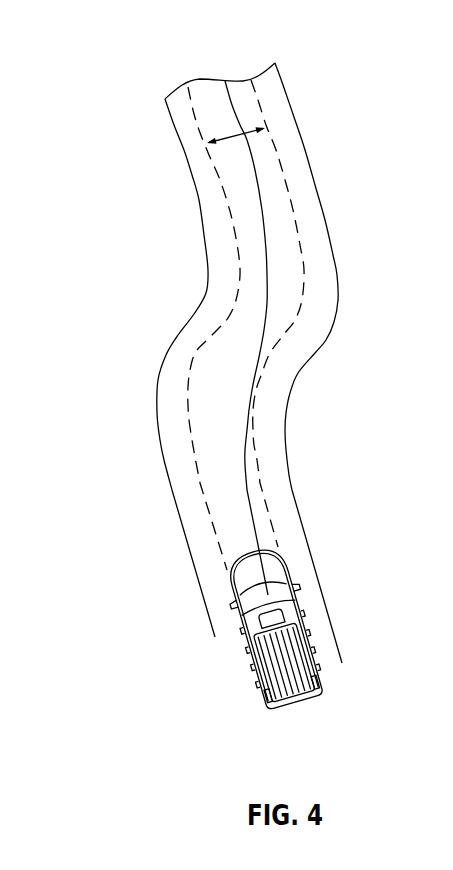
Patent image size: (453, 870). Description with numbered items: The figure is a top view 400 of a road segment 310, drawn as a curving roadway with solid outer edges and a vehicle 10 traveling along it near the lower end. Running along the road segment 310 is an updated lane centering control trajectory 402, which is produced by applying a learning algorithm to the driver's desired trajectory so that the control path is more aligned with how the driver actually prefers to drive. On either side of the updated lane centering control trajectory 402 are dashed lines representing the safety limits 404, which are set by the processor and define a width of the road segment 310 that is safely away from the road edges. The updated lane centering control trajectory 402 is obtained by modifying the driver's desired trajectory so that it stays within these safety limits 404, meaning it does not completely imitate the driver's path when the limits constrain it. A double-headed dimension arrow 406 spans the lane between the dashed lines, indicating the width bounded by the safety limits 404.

The top view 400 is at (327, 53).
The road segment 310 is at (331, 248).
The updated lane centering control trajectory 402 is at (276, 313).
The safety limits 404 is at (200, 483).
The lane width 406 is at (226, 138).
The vehicle 10 is at (322, 688).